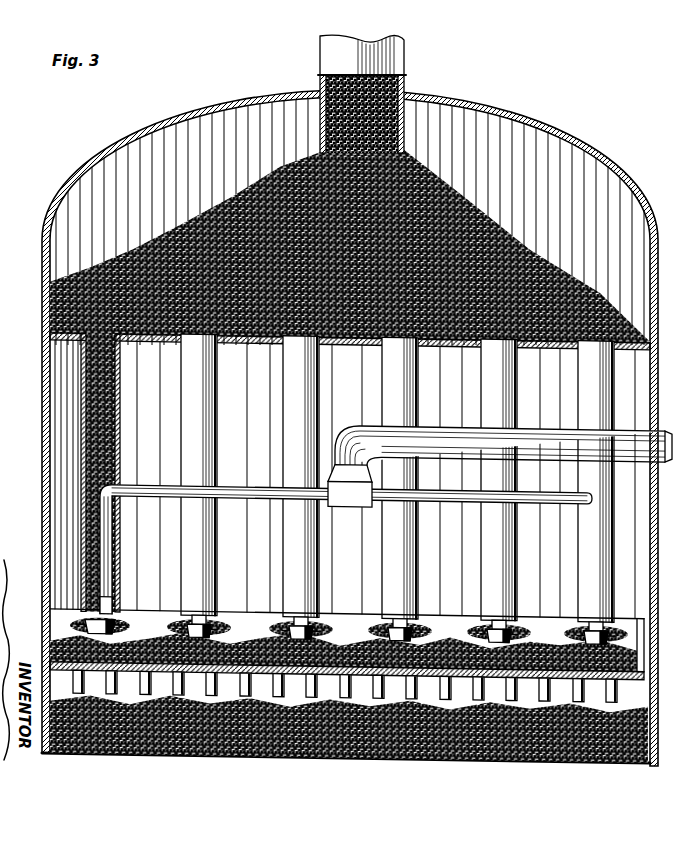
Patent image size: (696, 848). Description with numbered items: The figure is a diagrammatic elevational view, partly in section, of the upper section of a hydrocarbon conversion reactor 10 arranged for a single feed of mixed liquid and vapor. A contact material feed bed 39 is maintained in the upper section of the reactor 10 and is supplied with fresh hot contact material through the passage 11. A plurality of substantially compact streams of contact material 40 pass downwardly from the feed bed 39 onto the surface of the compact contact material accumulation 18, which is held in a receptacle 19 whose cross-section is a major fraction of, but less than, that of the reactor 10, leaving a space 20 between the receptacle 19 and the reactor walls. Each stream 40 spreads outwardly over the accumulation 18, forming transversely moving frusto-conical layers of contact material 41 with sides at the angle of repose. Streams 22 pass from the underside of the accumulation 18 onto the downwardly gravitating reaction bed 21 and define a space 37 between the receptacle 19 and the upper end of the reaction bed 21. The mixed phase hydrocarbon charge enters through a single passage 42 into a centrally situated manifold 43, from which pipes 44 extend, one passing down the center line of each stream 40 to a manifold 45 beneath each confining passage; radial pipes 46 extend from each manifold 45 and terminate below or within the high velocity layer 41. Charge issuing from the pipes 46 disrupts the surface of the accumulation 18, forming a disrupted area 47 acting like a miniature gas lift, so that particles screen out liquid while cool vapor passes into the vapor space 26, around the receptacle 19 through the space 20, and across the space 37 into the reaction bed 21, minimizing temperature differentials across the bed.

The reactor 10 is at (47, 212).
The passage 11 is at (321, 55).
The compact contact material accumulation 18 is at (262, 640).
The receptacle 19 is at (646, 631).
The space 20 is at (646, 657).
The reaction bed 21 is at (440, 750).
The streams 22 is at (227, 690).
The vapor space 26 is at (52, 423).
The space 37 is at (365, 687).
The contact material feed bed 39 is at (478, 216).
The streams of contact material 40 is at (180, 397).
The frusto-conical layers of contact material 41 is at (245, 640).
The passage 42 is at (634, 436).
The manifold 43 is at (360, 478).
The pipes 44 is at (244, 487).
The manifold 45 is at (121, 606).
The radial pipes 46 is at (118, 610).
The disrupted area 47 is at (432, 636).